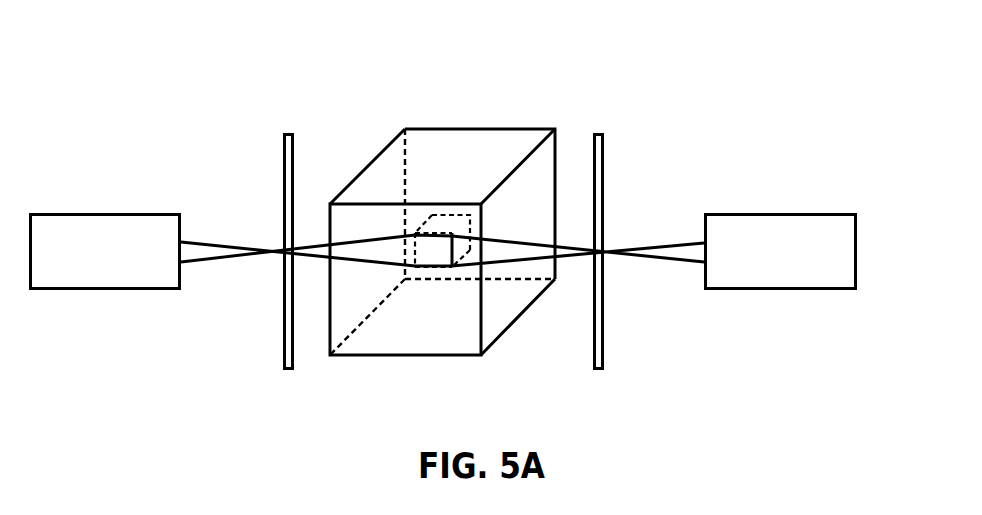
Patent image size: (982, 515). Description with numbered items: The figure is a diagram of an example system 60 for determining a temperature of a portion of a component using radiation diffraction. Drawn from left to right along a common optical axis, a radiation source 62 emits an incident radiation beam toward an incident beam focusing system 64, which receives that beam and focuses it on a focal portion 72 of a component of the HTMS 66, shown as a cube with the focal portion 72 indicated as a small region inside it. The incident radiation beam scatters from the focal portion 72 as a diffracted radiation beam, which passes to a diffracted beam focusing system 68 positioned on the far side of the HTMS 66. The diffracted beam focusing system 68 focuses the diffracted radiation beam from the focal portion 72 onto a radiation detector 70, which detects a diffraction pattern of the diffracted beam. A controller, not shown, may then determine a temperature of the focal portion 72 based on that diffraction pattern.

The system 60 is at (121, 69).
The radiation source 62 is at (105, 213).
The incident beam focusing system 64 is at (288, 133).
The HTMS 66 is at (413, 129).
The diffracted beam focusing system 68 is at (598, 133).
The radiation detector 70 is at (780, 213).
The focal portion 72 is at (452, 233).